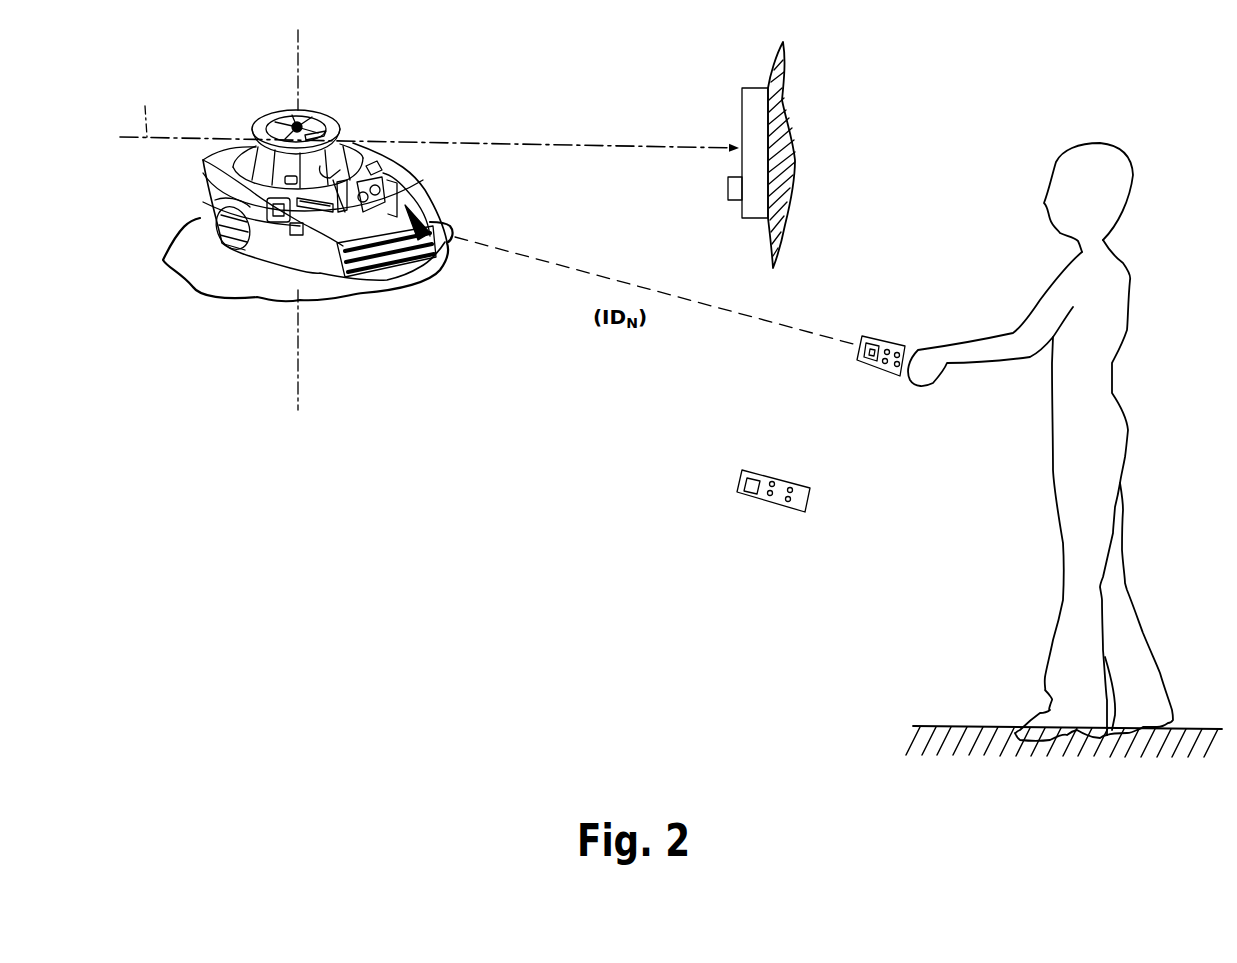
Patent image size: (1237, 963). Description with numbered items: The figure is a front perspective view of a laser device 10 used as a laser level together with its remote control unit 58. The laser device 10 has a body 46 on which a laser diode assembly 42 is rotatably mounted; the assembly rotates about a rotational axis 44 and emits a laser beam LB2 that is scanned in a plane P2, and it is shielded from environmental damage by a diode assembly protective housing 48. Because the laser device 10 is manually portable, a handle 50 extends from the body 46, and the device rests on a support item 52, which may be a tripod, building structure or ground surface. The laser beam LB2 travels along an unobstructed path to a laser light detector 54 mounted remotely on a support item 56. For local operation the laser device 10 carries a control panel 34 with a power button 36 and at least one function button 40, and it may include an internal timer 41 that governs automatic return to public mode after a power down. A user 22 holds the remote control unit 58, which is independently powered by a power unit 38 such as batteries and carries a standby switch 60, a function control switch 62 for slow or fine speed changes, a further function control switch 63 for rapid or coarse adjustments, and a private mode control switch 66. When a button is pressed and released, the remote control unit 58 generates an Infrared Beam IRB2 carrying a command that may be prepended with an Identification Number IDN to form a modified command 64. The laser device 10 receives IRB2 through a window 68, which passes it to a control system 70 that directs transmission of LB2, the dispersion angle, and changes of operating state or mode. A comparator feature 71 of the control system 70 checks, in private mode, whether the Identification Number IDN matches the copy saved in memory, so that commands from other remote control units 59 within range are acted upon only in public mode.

The laser device 10 is at (188, 108).
The user 22 is at (1113, 283).
The control panel 34 is at (380, 166).
The power button 36 is at (385, 185).
The power unit 38 is at (293, 238).
The function button 40 is at (388, 195).
The internal timer 41 is at (375, 164).
The laser diode assembly 42 is at (301, 126).
The rotational axis 44 is at (300, 48).
The body 46 is at (215, 165).
The diode assembly protective housing 48 is at (272, 116).
The handle 50 is at (403, 257).
The support item 52 is at (210, 266).
The laser light detector 54 is at (762, 105).
The support item 56 is at (775, 208).
The remote control unit 58 is at (893, 370).
The remote control units 59 is at (772, 502).
The standby switch 60 is at (890, 340).
The function control switch 62 is at (887, 372).
The function control switch 63 is at (897, 378).
The modified command 64 is at (866, 362).
The private mode control switch 66 is at (903, 343).
The window 68 is at (230, 205).
The control system 70 is at (290, 232).
The comparator feature 71 is at (278, 218).
The laser beam LB2 is at (528, 142).
The Infrared Beam IRB2 is at (600, 277).
The plane P2 is at (145, 106).
The Identification Number IDN is at (862, 338).